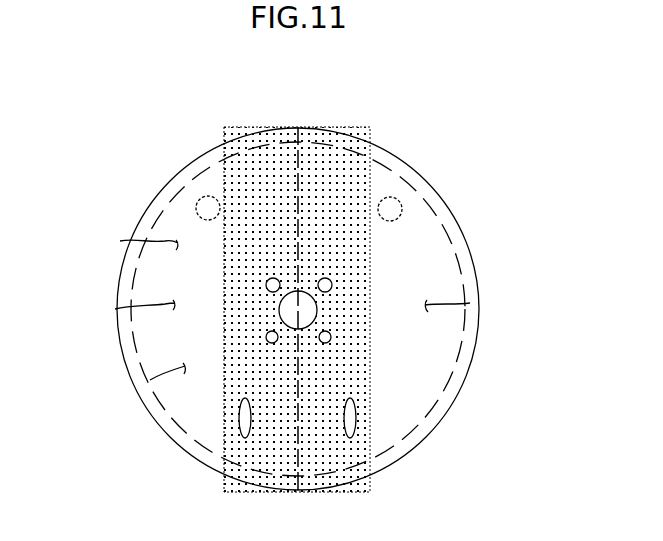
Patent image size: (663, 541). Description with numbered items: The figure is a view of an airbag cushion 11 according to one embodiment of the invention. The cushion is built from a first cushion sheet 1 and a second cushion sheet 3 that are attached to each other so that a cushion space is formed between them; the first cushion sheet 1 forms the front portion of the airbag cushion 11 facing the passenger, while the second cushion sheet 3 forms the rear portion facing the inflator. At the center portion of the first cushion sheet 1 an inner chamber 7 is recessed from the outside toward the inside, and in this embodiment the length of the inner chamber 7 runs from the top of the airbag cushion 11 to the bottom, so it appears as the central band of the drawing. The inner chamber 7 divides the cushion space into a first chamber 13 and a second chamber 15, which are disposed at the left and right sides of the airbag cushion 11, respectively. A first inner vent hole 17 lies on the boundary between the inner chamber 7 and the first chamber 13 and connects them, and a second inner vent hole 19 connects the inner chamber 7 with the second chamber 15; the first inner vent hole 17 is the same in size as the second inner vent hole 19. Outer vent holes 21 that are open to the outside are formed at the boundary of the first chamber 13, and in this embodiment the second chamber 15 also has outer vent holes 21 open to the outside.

The first cushion sheet 1 is at (150, 380).
The second cushion sheet 3 is at (115, 309).
The inner chamber 7 is at (345, 178).
The airbag cushion 11 is at (158, 193).
The first chamber 13 is at (120, 241).
The second chamber 15 is at (470, 303).
The first inner vent hole 17 is at (245, 418).
The second inner vent hole 19 is at (350, 418).
The outer vent hole 21 is at (208, 208).